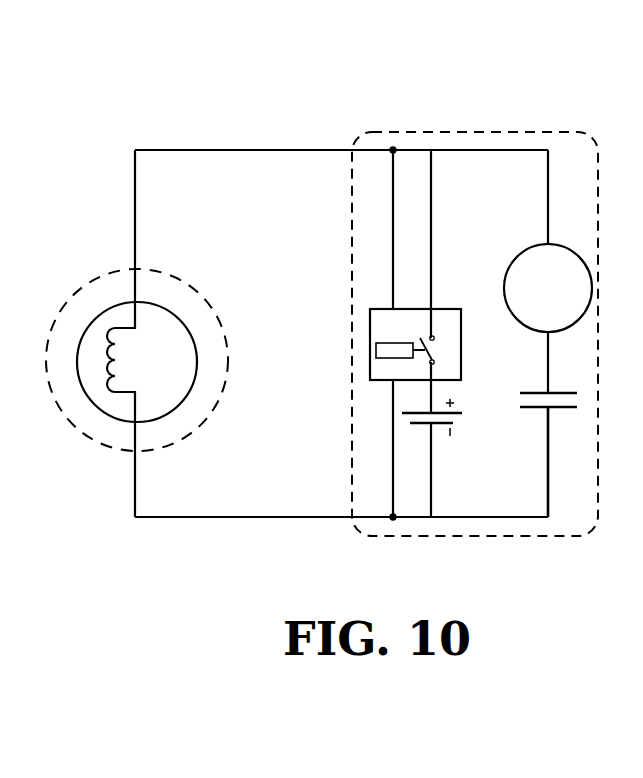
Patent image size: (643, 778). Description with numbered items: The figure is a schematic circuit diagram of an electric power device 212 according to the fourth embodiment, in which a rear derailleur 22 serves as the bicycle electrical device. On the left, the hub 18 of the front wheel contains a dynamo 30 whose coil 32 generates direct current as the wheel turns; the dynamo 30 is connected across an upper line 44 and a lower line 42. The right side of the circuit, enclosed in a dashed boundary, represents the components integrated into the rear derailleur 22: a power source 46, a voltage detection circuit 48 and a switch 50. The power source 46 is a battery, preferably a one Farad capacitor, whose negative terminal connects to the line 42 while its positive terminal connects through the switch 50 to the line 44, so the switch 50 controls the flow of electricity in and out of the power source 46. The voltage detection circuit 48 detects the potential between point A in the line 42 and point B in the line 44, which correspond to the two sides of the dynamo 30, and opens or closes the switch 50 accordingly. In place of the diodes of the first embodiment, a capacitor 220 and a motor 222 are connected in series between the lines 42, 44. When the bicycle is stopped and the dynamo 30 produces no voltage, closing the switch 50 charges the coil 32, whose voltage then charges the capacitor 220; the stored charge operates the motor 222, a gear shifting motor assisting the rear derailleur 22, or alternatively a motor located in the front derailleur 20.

The electric power device 212 is at (342, 58).
The line 44 is at (191, 150).
The line 42 is at (249, 517).
The hub 18 is at (93, 282).
The dynamo 30 is at (110, 418).
The coil 32 is at (115, 365).
The rear derailleur 22 is at (481, 296).
The front derailleur 20 is at (528, 132).
The motor 222 is at (580, 307).
The capacitor 220 is at (560, 392).
The voltage detection circuit 48 is at (377, 313).
The switch 50 is at (437, 350).
The power source 46 is at (450, 423).
The point A is at (393, 517).
The point B is at (393, 150).